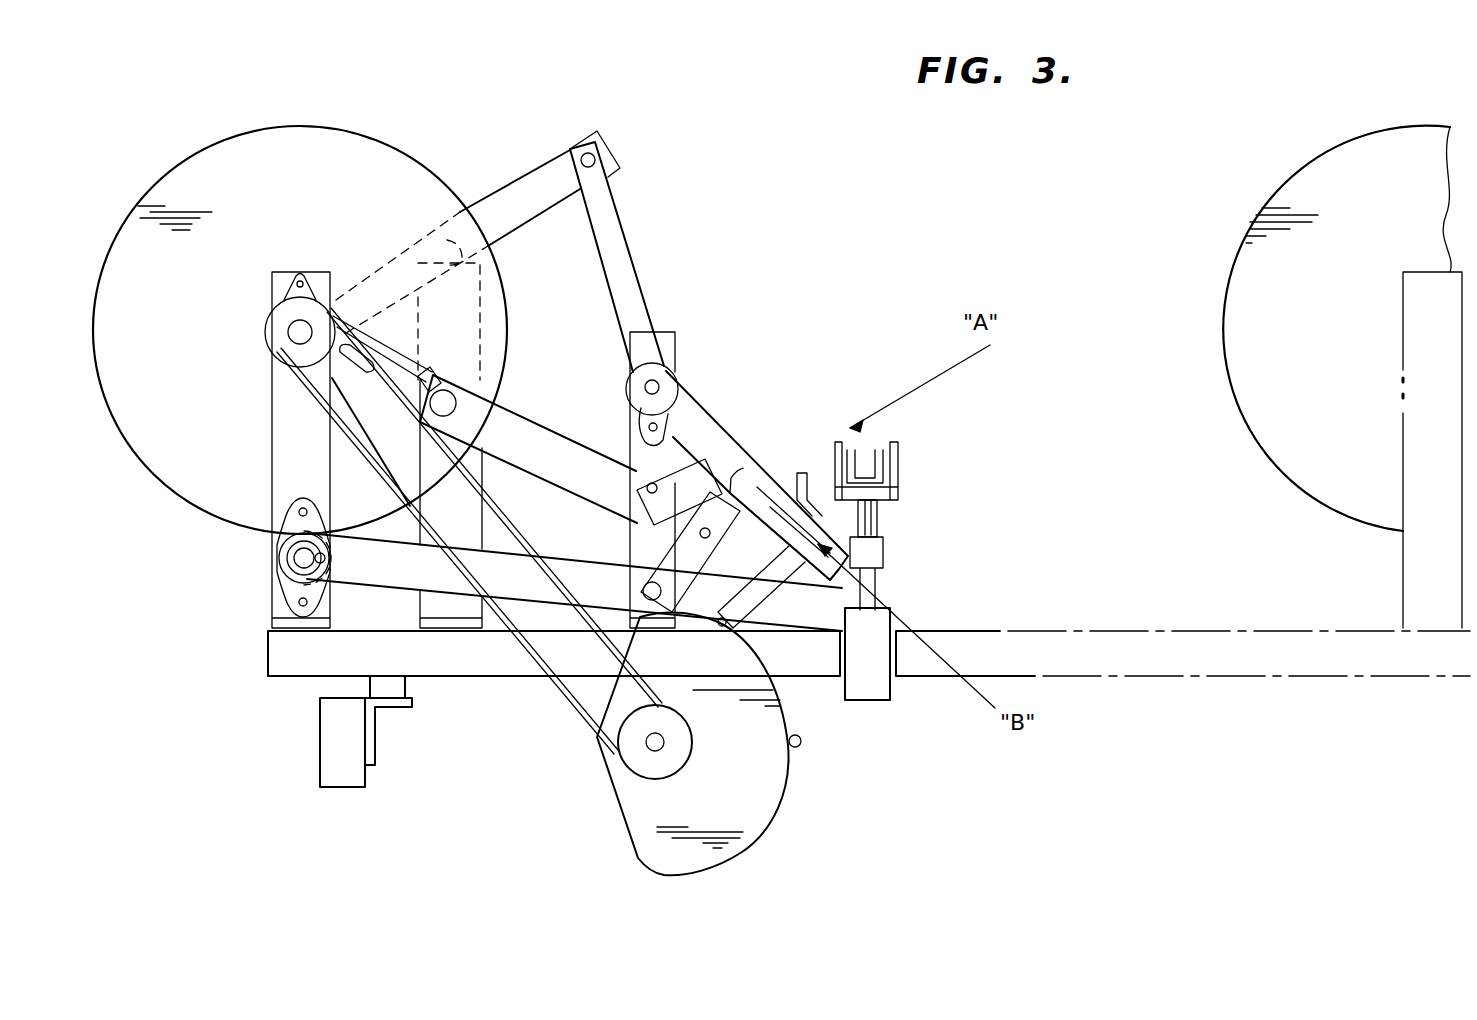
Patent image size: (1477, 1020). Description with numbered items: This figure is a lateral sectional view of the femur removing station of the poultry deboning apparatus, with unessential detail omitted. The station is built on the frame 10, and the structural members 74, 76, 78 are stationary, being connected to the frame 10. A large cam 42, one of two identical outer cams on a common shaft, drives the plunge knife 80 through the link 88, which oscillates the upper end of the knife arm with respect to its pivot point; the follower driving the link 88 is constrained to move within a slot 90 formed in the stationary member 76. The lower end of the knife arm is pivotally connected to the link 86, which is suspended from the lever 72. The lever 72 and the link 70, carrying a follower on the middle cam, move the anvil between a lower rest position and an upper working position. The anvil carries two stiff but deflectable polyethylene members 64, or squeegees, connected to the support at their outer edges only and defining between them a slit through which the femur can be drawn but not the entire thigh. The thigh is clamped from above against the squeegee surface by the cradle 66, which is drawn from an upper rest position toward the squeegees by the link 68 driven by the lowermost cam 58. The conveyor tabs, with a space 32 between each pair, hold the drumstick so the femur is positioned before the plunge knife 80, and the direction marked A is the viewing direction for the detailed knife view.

The frame 10 is at (502, 670).
The space 32 is at (900, 468).
The cam 42 is at (196, 332).
The lowermost cam 58 is at (641, 834).
The polyethylene members 64 is at (876, 592).
The cradle 66 is at (808, 486).
The link 68 is at (762, 590).
The link 70 is at (520, 185).
The lever 72 is at (616, 265).
The structural member 74 is at (320, 461).
The structural member 76 is at (432, 372).
The structural member 78 is at (466, 511).
The plunge knife 80 is at (763, 470).
The link 86 is at (683, 566).
The link 88 is at (528, 462).
The slot 90 is at (366, 372).